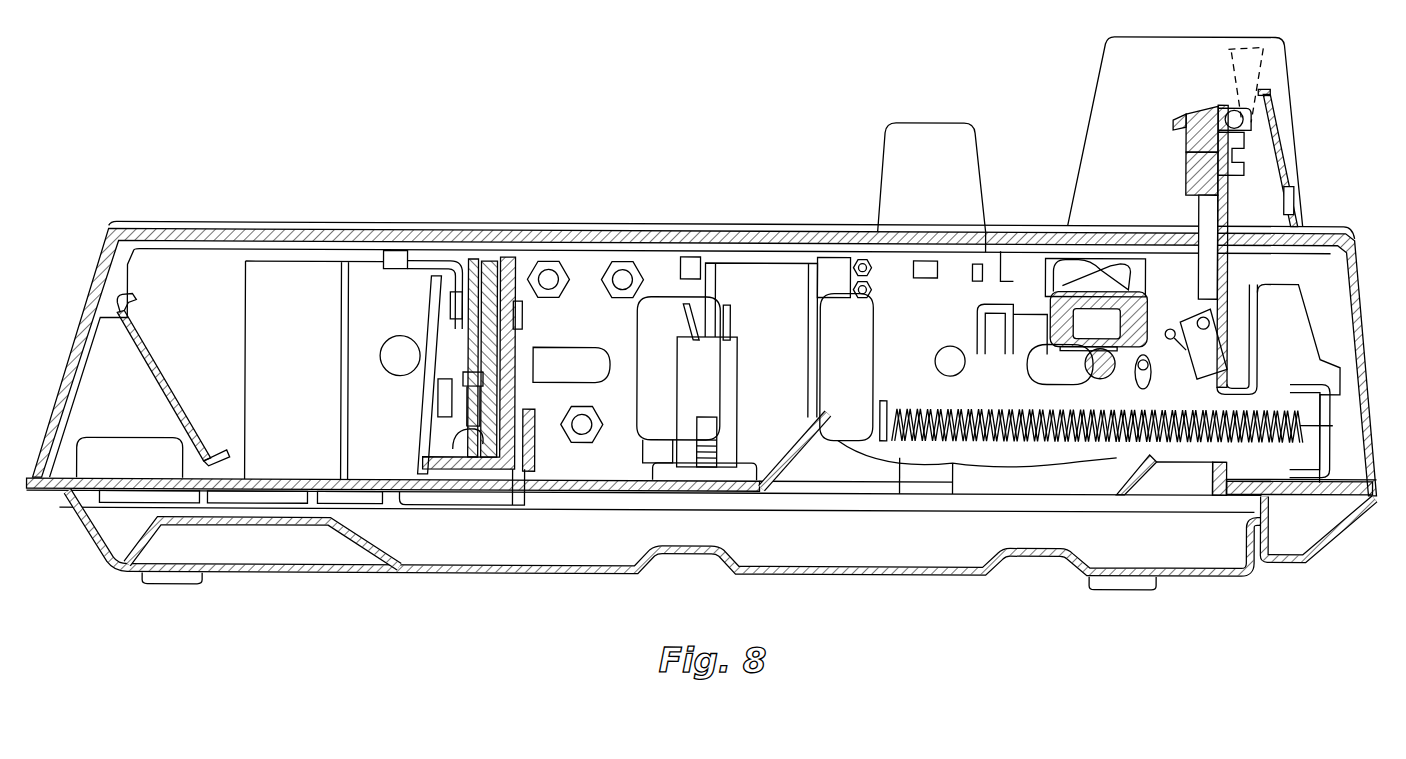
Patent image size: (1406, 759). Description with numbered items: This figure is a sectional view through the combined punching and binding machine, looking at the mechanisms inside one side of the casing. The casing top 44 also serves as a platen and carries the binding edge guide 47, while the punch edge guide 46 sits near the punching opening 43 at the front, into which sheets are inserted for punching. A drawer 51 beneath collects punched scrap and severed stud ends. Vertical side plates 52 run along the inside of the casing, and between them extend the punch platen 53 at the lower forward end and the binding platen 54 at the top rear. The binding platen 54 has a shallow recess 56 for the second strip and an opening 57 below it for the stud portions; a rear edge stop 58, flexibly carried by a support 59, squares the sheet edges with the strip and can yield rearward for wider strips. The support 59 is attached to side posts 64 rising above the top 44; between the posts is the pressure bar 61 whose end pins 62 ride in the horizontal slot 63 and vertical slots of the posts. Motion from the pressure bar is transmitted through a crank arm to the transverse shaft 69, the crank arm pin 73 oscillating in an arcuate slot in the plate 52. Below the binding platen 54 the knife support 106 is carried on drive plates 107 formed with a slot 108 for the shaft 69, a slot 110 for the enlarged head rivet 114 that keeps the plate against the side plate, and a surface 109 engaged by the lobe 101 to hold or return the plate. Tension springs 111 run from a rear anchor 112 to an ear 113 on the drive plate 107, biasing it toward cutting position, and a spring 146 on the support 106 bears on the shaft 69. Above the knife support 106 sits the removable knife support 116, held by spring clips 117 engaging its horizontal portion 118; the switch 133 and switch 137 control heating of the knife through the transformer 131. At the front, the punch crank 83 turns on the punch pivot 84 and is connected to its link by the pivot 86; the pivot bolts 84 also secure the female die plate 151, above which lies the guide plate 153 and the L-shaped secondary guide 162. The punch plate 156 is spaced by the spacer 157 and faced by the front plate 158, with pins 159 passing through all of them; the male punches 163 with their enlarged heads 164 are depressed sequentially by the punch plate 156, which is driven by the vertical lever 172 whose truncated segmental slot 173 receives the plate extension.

The punching opening 43 is at (103, 360).
The top 44 is at (592, 232).
The punch edge guide 46 is at (130, 448).
The binding edge guide 47 is at (905, 205).
The drawer 51 is at (487, 567).
The side plate 52 is at (995, 480).
The punch platen 53 is at (280, 478).
The binding platen 54 is at (990, 230).
The recess 56 is at (1206, 232).
The opening 57 is at (1228, 266).
The rear edge stop 58 is at (1225, 228).
The support 59 is at (1248, 153).
The pressure bar 61 is at (1183, 140).
The pin 62 is at (1183, 166).
The horizontal slot 63 is at (1232, 107).
The side post 64 is at (1153, 99).
The shaft 69 is at (1094, 378).
The pin 73 is at (1150, 378).
The punch crank 83 is at (440, 432).
The punch pivot 84 is at (455, 455).
The pivot 86 is at (402, 343).
The lobe 101 is at (977, 320).
The knife support 106 is at (1098, 321).
The drive plate 107 is at (1050, 309).
The horizontally elongated slot 108 is at (1090, 380).
The surface 109 is at (978, 386).
The horizontally elongated slot 110 is at (890, 365).
The tension spring 111 is at (935, 448).
The rear stationary anchor 112 is at (1335, 402).
The ear 113 is at (883, 410).
The enlarged head rivet 114 is at (948, 355).
The removable knife support 116 is at (1113, 270).
The spring clip 117 is at (1050, 268).
The horizontal portion 118 is at (1122, 268).
The transformer 131 is at (637, 340).
The switch 133 is at (1212, 345).
The switch 137 is at (845, 275).
The spring 146 is at (1040, 420).
The female die plate 151 is at (470, 493).
The guide plate 153 is at (505, 338).
The punch plate 156 is at (472, 262).
The spacer 157 is at (490, 262).
The front plate 158 is at (445, 330).
The pin 159 is at (522, 313).
The L-shaped secondary guide 162 is at (530, 464).
The male punch 163 is at (472, 398).
The enlarged head 164 is at (480, 372).
The vertical lever 172 is at (430, 382).
The truncated segmental slot 173 is at (452, 300).